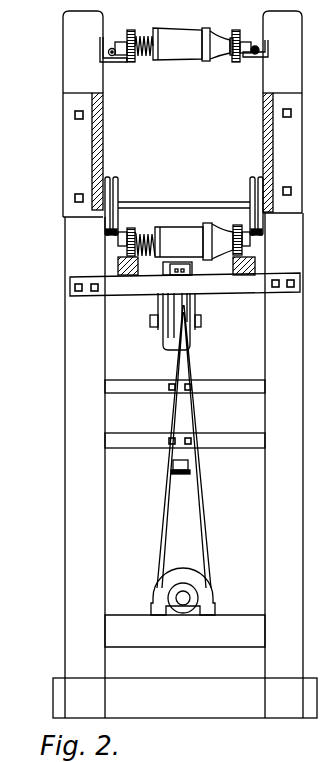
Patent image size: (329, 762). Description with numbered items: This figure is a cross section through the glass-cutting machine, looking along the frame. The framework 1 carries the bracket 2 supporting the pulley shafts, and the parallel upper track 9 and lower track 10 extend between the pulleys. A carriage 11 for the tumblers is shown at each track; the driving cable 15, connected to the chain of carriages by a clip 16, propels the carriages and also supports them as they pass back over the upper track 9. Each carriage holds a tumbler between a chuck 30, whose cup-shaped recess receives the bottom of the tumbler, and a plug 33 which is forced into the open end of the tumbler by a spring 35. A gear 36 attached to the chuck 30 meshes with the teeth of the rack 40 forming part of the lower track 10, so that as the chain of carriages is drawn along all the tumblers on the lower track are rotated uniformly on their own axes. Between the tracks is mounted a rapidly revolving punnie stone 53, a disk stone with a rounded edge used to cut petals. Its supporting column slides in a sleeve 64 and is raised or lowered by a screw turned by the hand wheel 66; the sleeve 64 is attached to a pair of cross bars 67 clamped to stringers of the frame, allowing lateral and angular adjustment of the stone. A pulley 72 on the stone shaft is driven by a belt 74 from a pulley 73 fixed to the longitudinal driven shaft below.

The framework 1 is at (297, 375).
The bracket 2 is at (104, 129).
The upper track 9 is at (113, 62).
The lower track 10 is at (118, 264).
The carriage 11 is at (222, 254).
The driving cable 15 is at (104, 52).
The clip 16 is at (126, 40).
The chuck 30 is at (212, 60).
The plug 33 is at (153, 33).
The spring 35 is at (145, 57).
The gear 36 is at (237, 29).
The rack 40 is at (146, 262).
The punnie stone 53 is at (170, 333).
The sleeve 64 is at (182, 413).
The hand wheel 66 is at (183, 480).
The cross bar 67 is at (248, 393).
The pulley 72 is at (196, 311).
The pulley 73 is at (205, 580).
The belt 74 is at (203, 512).